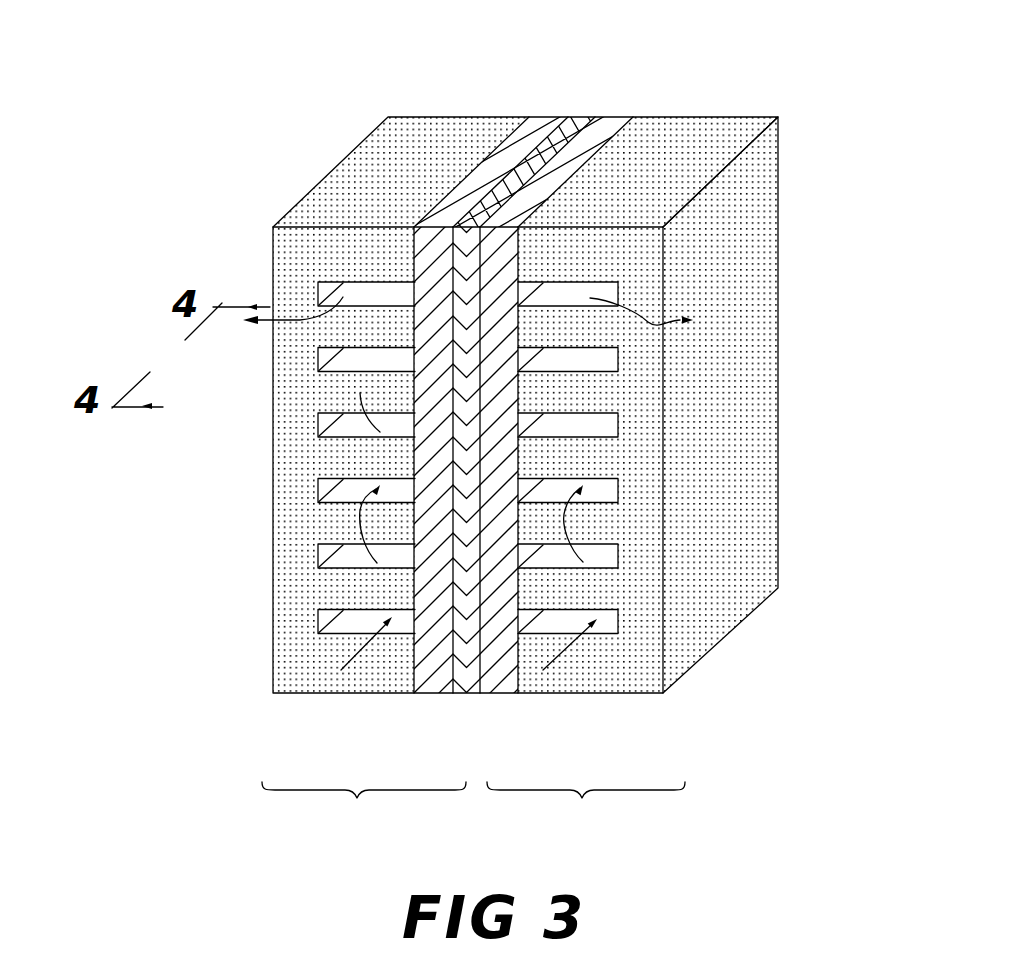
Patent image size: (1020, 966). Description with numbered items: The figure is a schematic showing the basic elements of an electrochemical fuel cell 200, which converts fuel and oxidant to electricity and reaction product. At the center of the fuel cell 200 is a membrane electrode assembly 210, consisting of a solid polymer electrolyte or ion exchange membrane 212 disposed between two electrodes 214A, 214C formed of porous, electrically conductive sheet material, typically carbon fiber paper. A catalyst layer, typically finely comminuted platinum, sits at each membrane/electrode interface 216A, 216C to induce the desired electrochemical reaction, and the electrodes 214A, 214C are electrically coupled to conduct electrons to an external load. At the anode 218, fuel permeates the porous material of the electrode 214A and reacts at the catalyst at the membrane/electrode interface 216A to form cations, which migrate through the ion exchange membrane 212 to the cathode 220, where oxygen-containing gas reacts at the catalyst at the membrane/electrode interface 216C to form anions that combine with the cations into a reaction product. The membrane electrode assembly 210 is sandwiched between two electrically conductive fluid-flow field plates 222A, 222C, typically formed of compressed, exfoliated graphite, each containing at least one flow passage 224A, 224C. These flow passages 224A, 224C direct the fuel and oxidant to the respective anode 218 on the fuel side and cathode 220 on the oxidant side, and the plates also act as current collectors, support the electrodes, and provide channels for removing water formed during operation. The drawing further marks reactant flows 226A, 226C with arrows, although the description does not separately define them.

The fuel cell 200 is at (856, 469).
The membrane electrode assembly 210 is at (626, 98).
The ion exchange membrane 212 is at (587, 117).
The electrode 214A is at (541, 117).
The electrode 214C is at (633, 117).
The membrane/electrode interface 216A is at (553, 117).
The membrane/electrode interface 216C is at (617, 117).
The anode 218 is at (364, 804).
The cathode 220 is at (586, 804).
The fluid-flow field plate 222A is at (347, 155).
The fluid-flow field plate 222C is at (760, 259).
The flow passage 224A is at (347, 625).
The flow passage 224C is at (611, 624).
The anode reactant flow 226A is at (378, 358).
The cathode reactant flow 226C is at (570, 527).